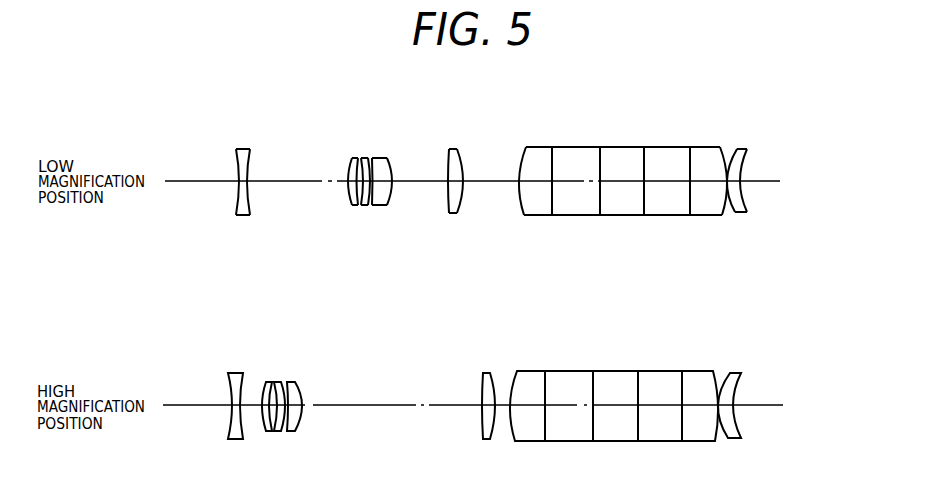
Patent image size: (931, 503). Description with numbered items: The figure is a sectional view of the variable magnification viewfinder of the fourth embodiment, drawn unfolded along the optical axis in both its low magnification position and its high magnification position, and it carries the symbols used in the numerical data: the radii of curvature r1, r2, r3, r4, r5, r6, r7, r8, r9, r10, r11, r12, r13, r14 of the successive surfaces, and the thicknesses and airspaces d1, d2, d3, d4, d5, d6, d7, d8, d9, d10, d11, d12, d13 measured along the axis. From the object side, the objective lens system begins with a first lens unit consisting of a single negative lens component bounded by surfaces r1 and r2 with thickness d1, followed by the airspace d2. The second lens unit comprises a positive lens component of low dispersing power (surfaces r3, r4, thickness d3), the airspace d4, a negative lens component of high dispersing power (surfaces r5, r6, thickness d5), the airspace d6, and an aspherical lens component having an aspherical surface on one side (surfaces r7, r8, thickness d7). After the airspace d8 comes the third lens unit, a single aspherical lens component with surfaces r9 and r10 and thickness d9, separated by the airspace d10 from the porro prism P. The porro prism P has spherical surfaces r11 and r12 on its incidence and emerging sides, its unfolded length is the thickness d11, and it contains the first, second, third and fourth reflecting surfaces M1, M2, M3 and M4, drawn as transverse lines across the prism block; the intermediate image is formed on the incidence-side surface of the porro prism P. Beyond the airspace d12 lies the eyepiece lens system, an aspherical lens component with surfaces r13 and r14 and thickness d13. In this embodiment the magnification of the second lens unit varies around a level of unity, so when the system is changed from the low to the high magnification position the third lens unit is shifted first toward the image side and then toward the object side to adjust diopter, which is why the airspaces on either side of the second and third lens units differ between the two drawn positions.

The thickness of first lens element d1 is at (238, 180).
The airspace d2 is at (276, 180).
The thickness of lens element d3 is at (349, 174).
The airspace d4 is at (352, 164).
The thickness of lens element d5 is at (367, 168).
The airspace d6 is at (376, 168).
The thickness of lens element d7 is at (387, 170).
The airspace d8 is at (423, 180).
The thickness of lens element d9 is at (457, 164).
The airspace d10 is at (488, 180).
The thickness of porro prism d11 is at (564, 180).
The airspace d12 is at (723, 160).
The thickness of eyepiece lens element d13 is at (743, 152).
The radius of curvature r1 is at (235, 203).
The radius of curvature r2 is at (250, 202).
The radius of curvature r3 is at (348, 197).
The radius of curvature r4 is at (355, 205).
The radius of curvature r5 is at (364, 206).
The radius of curvature r6 is at (372, 206).
The radius of curvature r7 is at (382, 205).
The radius of curvature r8 is at (389, 200).
The radius of curvature r9 is at (448, 203).
The radius of curvature r10 is at (462, 203).
The radius of curvature r11 is at (520, 202).
The radius of curvature r12 is at (722, 214).
The radius of curvature r13 is at (735, 213).
The radius of curvature r14 is at (745, 194).
The first reflecting surface M1 is at (552, 162).
The second reflecting surface M2 is at (600, 158).
The third reflecting surface M3 is at (644, 157).
The fourth reflecting surface M4 is at (690, 158).
The porro prism P is at (620, 147).